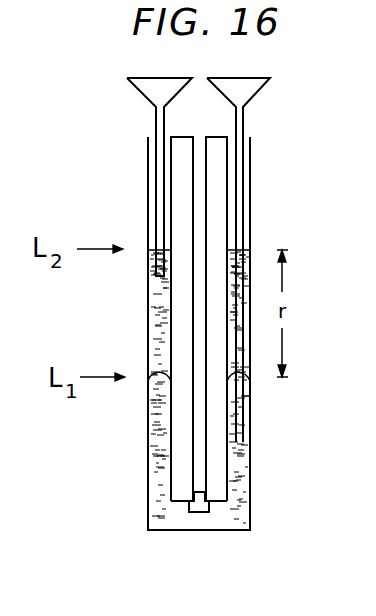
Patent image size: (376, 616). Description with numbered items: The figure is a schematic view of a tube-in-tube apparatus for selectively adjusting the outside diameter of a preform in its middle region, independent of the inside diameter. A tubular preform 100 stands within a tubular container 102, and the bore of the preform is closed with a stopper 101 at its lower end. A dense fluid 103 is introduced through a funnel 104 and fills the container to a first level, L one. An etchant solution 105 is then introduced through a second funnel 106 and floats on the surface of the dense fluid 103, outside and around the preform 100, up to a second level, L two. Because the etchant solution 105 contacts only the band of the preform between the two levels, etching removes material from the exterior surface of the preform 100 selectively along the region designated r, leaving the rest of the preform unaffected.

The tubular preform 100 is at (218, 194).
The stopper 101 is at (197, 512).
The tubular container 102 is at (147, 457).
The dense fluid 103 is at (237, 505).
The funnel 104 is at (256, 95).
The etchant solution 105 is at (150, 278).
The funnel 106 is at (145, 97).